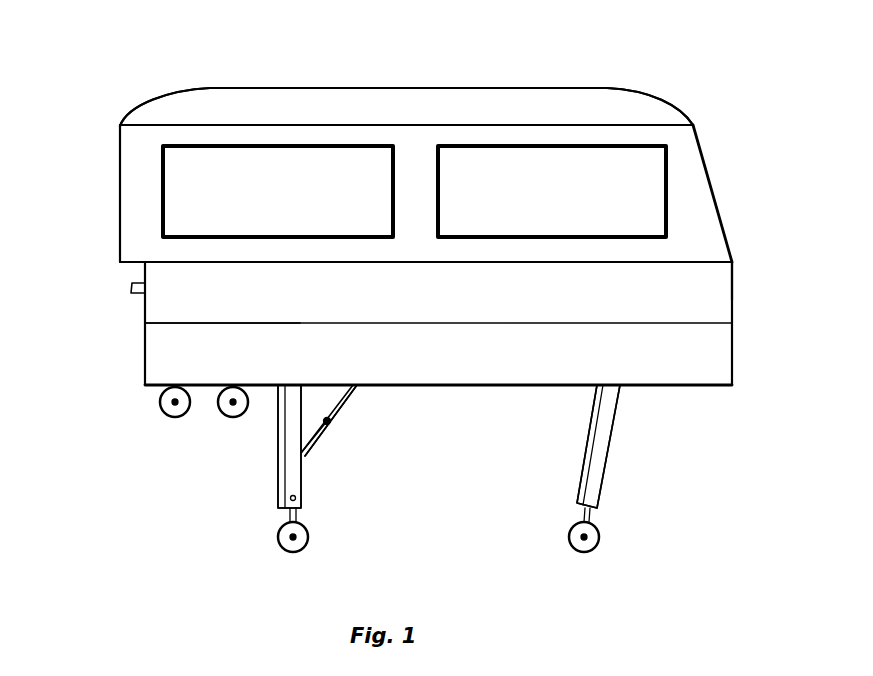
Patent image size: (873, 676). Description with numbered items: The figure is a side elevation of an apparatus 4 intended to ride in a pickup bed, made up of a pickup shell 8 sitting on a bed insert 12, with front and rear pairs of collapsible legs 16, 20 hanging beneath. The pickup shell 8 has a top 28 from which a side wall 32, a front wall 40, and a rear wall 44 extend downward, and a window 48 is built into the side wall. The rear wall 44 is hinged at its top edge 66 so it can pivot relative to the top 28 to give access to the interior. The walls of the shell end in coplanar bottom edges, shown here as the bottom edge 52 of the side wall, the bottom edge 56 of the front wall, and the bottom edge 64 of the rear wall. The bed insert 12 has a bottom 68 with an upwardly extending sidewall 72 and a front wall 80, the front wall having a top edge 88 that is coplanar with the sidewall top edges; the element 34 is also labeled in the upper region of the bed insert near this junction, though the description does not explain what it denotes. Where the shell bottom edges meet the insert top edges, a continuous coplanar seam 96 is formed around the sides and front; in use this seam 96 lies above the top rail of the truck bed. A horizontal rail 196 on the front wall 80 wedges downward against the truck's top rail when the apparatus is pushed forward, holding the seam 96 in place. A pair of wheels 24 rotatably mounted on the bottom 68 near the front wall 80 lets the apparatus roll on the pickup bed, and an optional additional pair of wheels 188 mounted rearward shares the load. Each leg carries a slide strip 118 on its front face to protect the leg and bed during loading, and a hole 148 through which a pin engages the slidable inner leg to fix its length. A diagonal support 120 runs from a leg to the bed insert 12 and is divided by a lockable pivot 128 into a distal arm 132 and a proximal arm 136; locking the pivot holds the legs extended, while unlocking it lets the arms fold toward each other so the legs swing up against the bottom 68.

The apparatus 4 is at (578, 57).
The pickup shell 8 is at (402, 98).
The bed insert 12 is at (720, 302).
The front pair of collapsible legs 16 is at (316, 504).
The rear pair of collapsible legs 20 is at (548, 492).
The wheel 24 is at (160, 417).
The top 28 is at (243, 88).
The side wall 32 is at (137, 243).
The upper band of lower body 34 is at (320, 262).
The front wall 40 is at (120, 150).
The rear wall 44 is at (708, 168).
The window 48 is at (414, 191).
The bottom edge 52 is at (418, 262).
The bottom edge 56 is at (120, 262).
The bottom edge 64 is at (732, 255).
The top edge 66 is at (693, 122).
The bottom 68 is at (657, 383).
The sidewall 72 is at (438, 305).
The front wall 80 is at (143, 323).
The top edge 88 is at (131, 288).
The seam 96 is at (185, 262).
The slide strip 118 is at (277, 487).
The diagonal support 120 is at (386, 427).
The lockable pivot 128 is at (327, 425).
The distal arm 132 is at (313, 447).
The proximal arm 136 is at (347, 400).
The hole 148 is at (280, 510).
The wheels 188 is at (233, 417).
The rail 196 is at (145, 320).